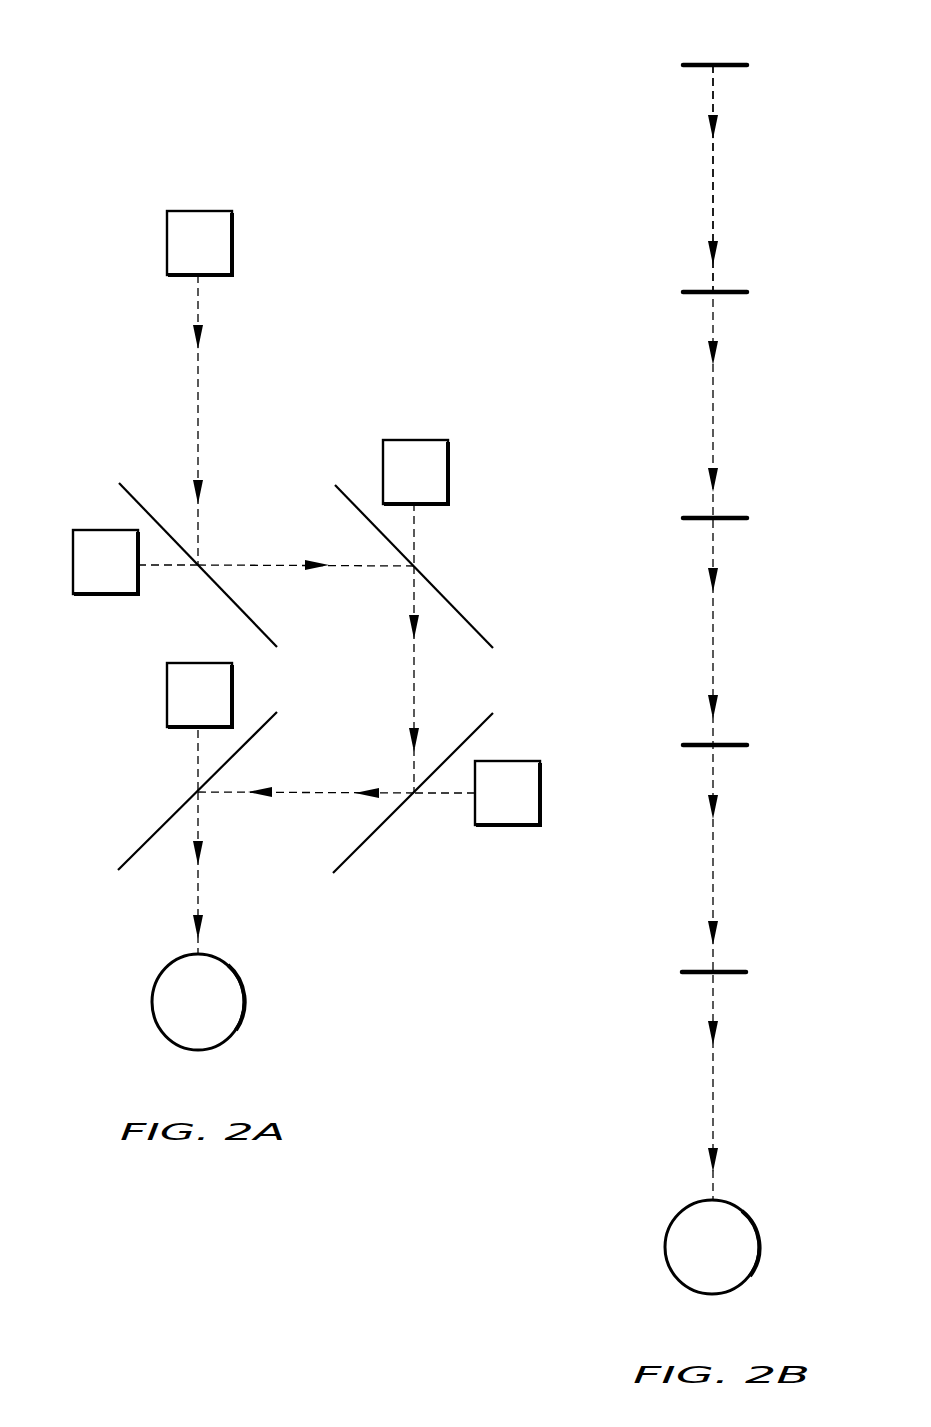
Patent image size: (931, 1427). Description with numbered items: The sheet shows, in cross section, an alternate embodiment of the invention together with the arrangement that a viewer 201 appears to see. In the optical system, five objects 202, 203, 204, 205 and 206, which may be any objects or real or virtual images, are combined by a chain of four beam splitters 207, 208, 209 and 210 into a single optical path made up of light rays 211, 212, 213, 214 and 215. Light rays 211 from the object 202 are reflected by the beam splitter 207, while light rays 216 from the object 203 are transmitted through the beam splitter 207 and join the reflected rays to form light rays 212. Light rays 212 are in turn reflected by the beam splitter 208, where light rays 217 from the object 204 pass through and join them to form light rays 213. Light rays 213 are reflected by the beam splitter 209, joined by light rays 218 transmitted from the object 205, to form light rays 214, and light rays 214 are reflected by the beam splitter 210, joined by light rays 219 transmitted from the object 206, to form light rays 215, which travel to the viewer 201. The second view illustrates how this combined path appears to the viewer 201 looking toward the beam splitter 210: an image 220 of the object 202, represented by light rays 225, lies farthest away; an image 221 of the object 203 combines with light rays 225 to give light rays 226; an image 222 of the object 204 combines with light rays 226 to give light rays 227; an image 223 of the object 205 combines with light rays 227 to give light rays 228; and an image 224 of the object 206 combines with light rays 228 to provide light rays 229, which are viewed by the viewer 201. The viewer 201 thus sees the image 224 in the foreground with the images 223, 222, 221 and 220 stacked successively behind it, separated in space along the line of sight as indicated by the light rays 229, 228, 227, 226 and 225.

In FIG. 2A, the viewer 201 is at (161, 976).
In FIG. 2B, the viewer 201 is at (675, 1222).
In FIG. 2A, the object 202 is at (200, 211).
In FIG. 2A, the object 203 is at (97, 530).
In FIG. 2A, the object 204 is at (420, 440).
In FIG. 2A, the object 205 is at (521, 761).
In FIG. 2A, the object 206 is at (167, 684).
In FIG. 2A, the beam splitter 207 is at (249, 616).
In FIG. 2A, the beam splitter 208 is at (463, 617).
In FIG. 2A, the beam splitter 209 is at (360, 848).
In FIG. 2A, the beam splitter 210 is at (258, 732).
In FIG. 2A, the light rays 211 is at (199, 408).
In FIG. 2A, the light rays 212 is at (265, 565).
In FIG. 2A, the light rays 213 is at (415, 696).
In FIG. 2A, the light rays 214 is at (314, 793).
In FIG. 2A, the light rays 215 is at (199, 885).
In FIG. 2A, the light rays 216 is at (158, 566).
In FIG. 2A, the light rays 217 is at (414, 530).
In FIG. 2A, the light rays 218 is at (438, 794).
In FIG. 2A, the light rays 219 is at (198, 768).
In FIG. 2B, the image 220 is at (730, 65).
In FIG. 2B, the image 221 is at (735, 292).
In FIG. 2B, the image 222 is at (735, 518).
In FIG. 2B, the image 223 is at (730, 745).
In FIG. 2B, the image 224 is at (731, 972).
In FIG. 2B, the light rays 225 is at (715, 172).
In FIG. 2B, the light rays 226 is at (714, 396).
In FIG. 2B, the light rays 227 is at (714, 632).
In FIG. 2B, the light rays 228 is at (714, 858).
In FIG. 2B, the light rays 229 is at (713, 1093).